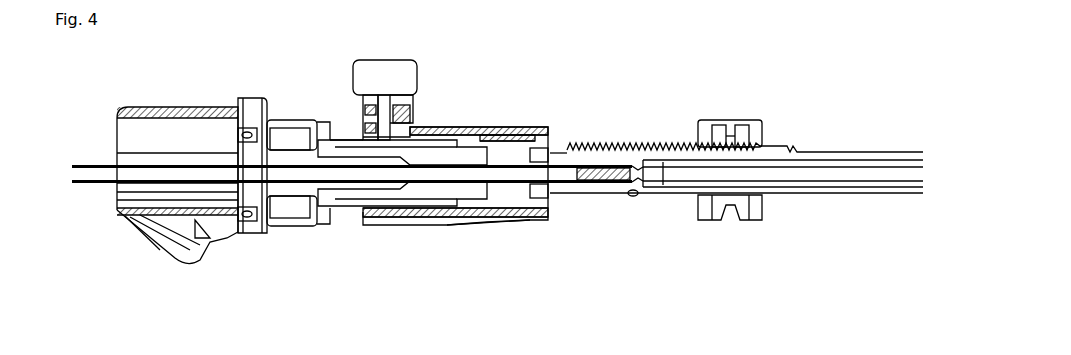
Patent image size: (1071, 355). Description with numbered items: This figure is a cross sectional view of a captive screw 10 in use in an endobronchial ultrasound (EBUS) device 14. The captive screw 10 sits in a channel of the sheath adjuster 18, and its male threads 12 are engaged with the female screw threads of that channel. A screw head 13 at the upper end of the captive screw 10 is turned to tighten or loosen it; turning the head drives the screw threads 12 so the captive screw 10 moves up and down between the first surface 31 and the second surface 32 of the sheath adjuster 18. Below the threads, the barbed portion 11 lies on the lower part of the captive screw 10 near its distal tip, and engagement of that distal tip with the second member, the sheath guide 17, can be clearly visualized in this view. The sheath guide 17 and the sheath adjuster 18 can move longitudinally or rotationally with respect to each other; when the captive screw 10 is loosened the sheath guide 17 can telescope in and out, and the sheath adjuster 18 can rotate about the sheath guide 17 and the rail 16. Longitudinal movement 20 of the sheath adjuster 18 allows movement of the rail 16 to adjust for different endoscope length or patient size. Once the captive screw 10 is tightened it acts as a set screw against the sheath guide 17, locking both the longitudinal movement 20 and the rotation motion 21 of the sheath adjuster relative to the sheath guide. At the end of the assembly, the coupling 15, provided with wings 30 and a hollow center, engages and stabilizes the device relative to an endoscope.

The captive screw 10 is at (392, 65).
The barbed portion 11 is at (410, 132).
The male threads 12 is at (410, 110).
The screw head 13 is at (402, 77).
The endobronchial ultrasound (EBUS) device 14 is at (735, 60).
The coupling 15 is at (182, 108).
The rail 16 is at (610, 145).
The sheath guide 17 is at (287, 223).
The sheath adjuster 18 is at (488, 222).
The longitudinal movement 20 is at (373, 265).
The rotation motion 21 is at (57, 157).
The wings 30 is at (178, 252).
The first surface 31 is at (368, 110).
The second surface 32 is at (365, 115).